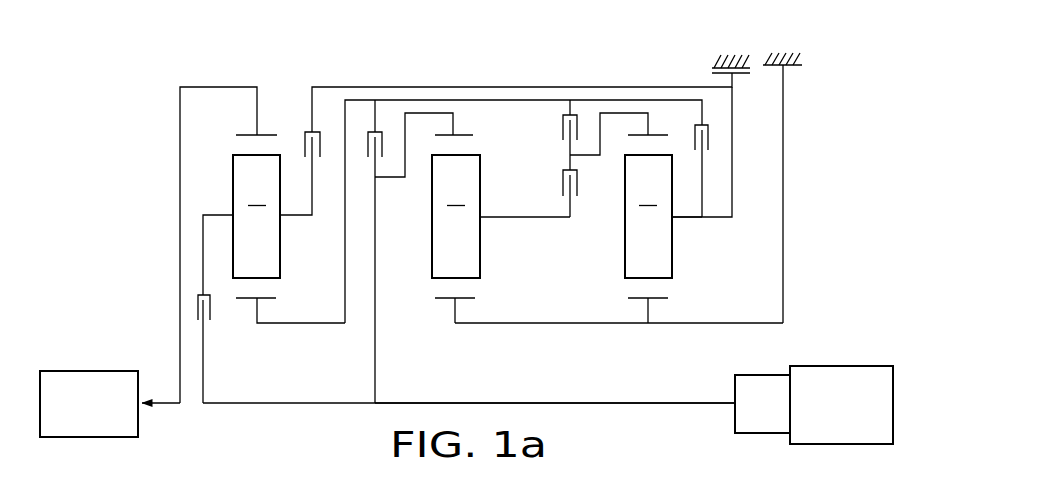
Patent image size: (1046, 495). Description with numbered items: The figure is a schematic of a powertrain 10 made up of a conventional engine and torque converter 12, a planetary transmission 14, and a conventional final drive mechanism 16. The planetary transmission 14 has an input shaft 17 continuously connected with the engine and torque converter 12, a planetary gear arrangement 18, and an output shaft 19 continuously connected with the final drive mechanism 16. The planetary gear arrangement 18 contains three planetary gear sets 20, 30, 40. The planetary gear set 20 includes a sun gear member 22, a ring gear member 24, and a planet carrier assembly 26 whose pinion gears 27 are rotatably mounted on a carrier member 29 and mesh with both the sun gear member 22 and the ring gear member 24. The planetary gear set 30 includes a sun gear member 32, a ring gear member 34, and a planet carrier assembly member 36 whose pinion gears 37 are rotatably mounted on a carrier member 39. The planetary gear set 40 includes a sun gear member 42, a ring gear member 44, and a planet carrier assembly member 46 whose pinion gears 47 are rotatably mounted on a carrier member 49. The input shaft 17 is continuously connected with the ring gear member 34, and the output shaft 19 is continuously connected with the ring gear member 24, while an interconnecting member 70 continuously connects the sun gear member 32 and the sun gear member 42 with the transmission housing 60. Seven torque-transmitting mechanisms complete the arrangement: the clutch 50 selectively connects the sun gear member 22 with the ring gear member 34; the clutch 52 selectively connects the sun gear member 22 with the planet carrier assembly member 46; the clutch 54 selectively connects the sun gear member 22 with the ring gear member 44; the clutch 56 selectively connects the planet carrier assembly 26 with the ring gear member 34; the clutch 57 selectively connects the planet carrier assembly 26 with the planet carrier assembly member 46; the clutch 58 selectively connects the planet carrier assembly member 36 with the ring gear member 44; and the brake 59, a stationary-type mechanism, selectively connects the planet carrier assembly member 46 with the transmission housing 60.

The powertrain 10 is at (122, 123).
The engine and torque converter 12 is at (822, 350).
The planetary transmission 14 is at (451, 139).
The final drive mechanism 16 is at (105, 357).
The input shaft 17 is at (710, 407).
The planetary gear arrangement 18 is at (595, 139).
The output shaft 19 is at (170, 408).
The planetary gear set 20 is at (247, 305).
The sun gear member 22 is at (265, 303).
The ring gear member 24 is at (246, 133).
The planet carrier assembly 26 is at (222, 203).
The pinion gears 27 is at (256, 216).
The carrier member 29 is at (225, 213).
The planetary gear set 30 is at (443, 300).
The sun gear member 32 is at (465, 300).
The ring gear member 34 is at (448, 133).
The planet carrier assembly member 36 is at (485, 227).
The pinion gears 37 is at (456, 216).
The carrier member 39 is at (497, 218).
The planetary gear set 40 is at (642, 300).
The sun gear member 42 is at (658, 300).
The ring gear member 44 is at (645, 133).
The planet carrier assembly member 46 is at (680, 227).
The pinion gears 47 is at (648, 216).
The carrier member 49 is at (683, 218).
The clutch 50 is at (365, 130).
The clutch 52 is at (710, 158).
The clutch 54 is at (556, 112).
The clutch 56 is at (190, 283).
The clutch 57 is at (305, 130).
The clutch 58 is at (582, 203).
The brake 59 is at (704, 65).
The transmission housing 60 is at (713, 53).
The interconnecting member 70 is at (543, 325).